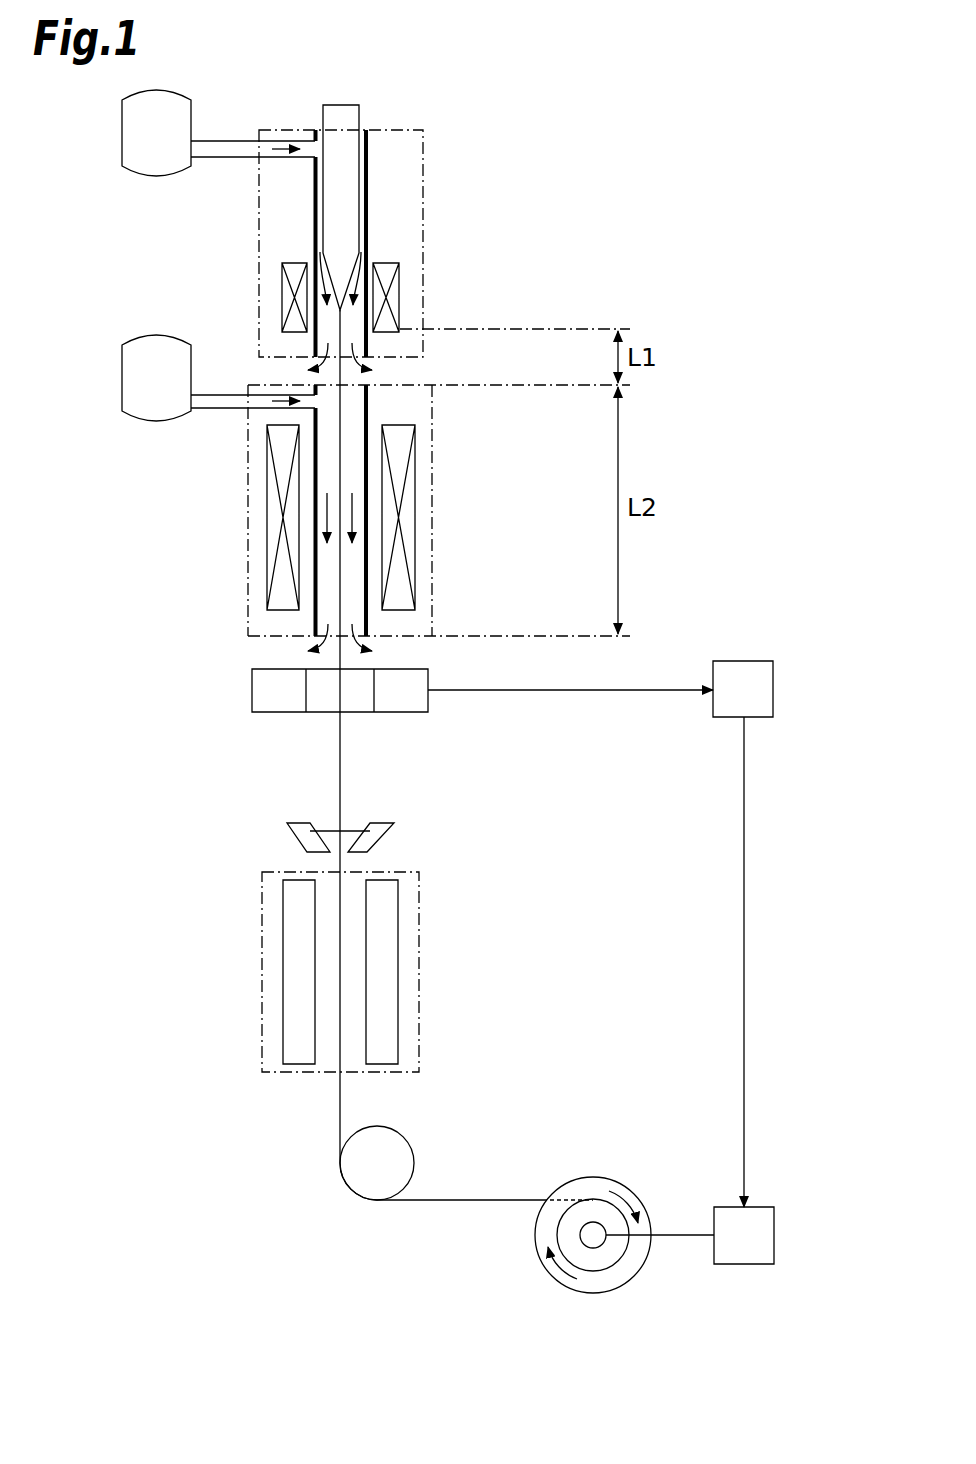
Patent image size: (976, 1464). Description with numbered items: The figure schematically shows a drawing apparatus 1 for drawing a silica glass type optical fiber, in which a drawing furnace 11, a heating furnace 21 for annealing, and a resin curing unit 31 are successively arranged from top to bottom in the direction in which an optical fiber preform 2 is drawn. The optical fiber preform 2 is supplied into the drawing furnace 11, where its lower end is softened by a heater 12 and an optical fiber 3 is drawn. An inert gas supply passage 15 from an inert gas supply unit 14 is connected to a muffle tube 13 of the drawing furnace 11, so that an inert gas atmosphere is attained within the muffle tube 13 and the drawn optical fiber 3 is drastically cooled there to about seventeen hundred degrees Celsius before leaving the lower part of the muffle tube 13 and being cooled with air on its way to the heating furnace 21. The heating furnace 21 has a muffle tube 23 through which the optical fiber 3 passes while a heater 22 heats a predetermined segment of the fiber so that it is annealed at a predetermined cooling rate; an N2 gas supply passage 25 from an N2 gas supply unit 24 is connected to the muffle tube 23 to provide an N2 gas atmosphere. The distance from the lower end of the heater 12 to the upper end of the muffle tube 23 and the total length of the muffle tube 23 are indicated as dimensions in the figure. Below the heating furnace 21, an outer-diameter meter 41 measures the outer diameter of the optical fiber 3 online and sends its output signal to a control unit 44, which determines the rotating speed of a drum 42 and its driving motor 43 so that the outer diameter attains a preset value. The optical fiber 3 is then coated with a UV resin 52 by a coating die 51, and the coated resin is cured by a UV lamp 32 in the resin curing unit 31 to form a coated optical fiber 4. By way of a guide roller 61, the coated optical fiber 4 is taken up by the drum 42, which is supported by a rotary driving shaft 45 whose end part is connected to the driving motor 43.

The drawing apparatus 1 is at (657, 200).
The optical fiber preform 2 is at (359, 118).
The optical fiber 3 is at (348, 382).
The coated optical fiber 4 is at (342, 1107).
The drawing furnace 11 is at (430, 236).
The heater 12 is at (400, 313).
The muffle tube 13 is at (368, 193).
The inert gas supply unit 14 is at (191, 113).
The inert gas supply passage 15 is at (235, 157).
The heating furnace 21 is at (433, 490).
The heater 22 is at (415, 580).
The muffle tube 23 is at (368, 396).
The N2 gas supply unit 24 is at (162, 423).
The N2 gas supply passage 25 is at (235, 393).
The resin curing unit 31 is at (419, 968).
The UV lamp 32 is at (398, 1044).
The outer-diameter meter 41 is at (403, 713).
The drum 42 is at (603, 1177).
The driving motor 43 is at (742, 1267).
The control unit 44 is at (727, 718).
The rotary driving shaft 45 is at (580, 1232).
The coating die 51 is at (382, 831).
The UV resin 52 is at (314, 838).
The guide roller 61 is at (348, 1163).